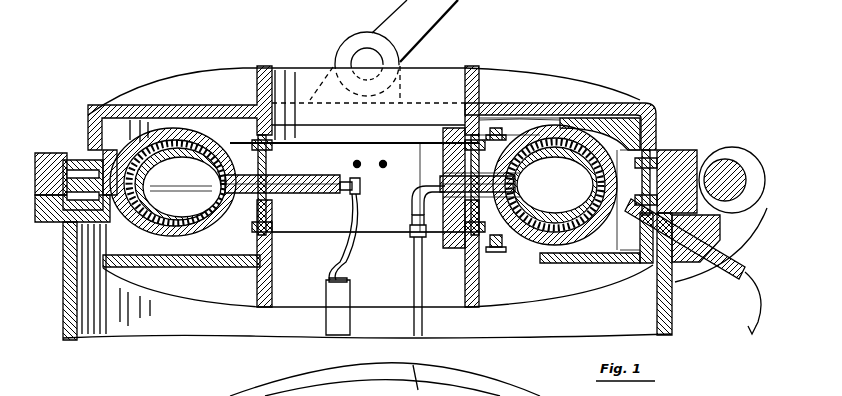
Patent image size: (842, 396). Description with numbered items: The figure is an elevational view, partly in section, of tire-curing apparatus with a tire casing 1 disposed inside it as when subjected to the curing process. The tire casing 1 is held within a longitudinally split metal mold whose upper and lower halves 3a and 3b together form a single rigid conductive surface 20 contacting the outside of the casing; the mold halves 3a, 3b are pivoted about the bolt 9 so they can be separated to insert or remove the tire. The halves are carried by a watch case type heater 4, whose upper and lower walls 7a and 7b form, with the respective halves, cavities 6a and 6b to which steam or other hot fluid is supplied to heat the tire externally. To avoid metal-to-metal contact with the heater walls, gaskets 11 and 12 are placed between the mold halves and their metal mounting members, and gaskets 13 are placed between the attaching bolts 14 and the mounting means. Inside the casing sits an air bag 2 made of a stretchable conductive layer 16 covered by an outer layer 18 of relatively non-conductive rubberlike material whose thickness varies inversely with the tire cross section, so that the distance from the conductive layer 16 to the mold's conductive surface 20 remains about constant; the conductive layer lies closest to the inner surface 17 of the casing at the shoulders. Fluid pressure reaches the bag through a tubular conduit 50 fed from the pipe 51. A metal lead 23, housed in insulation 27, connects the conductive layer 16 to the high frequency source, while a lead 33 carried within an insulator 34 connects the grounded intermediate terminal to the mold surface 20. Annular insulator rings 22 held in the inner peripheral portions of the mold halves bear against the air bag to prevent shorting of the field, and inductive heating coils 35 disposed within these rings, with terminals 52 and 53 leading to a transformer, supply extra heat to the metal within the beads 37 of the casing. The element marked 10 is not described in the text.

The tire casing 1 is at (598, 140).
The air bag 2 is at (166, 212).
The upper mold half 3a is at (583, 125).
The lower mold half 3b is at (598, 268).
The watch case type heater 4 is at (209, 68).
The upper cavity 6a is at (632, 122).
The lower cavity 6b is at (505, 250).
The upper wall 7a is at (500, 126).
The lower wall 7b is at (550, 252).
The bolt 9 is at (742, 165).
The rotor 10 is at (318, 385).
The gasket 11 is at (666, 155).
The gasket 12 is at (430, 136).
The gaskets 13 is at (702, 123).
The attaching bolts 14 is at (76, 158).
The conductive layer 16 is at (188, 166).
The inner surface of the tire casing 17 is at (153, 132).
The outer layer of rubberlike material 18 is at (593, 179).
The conductive surface of the forming mold 20 is at (567, 125).
The annular insulator rings 22 is at (443, 175).
The metal lead 23 is at (346, 192).
The insulation 27 is at (308, 176).
The lead 33 is at (443, 153).
The insulator 34 is at (722, 276).
The coils 35 is at (520, 145).
The beads 37 is at (212, 193).
The tubular conduit 50 is at (418, 188).
The pipe 51 is at (420, 296).
The coil terminal 52 is at (383, 160).
The coil terminal 53 is at (357, 160).